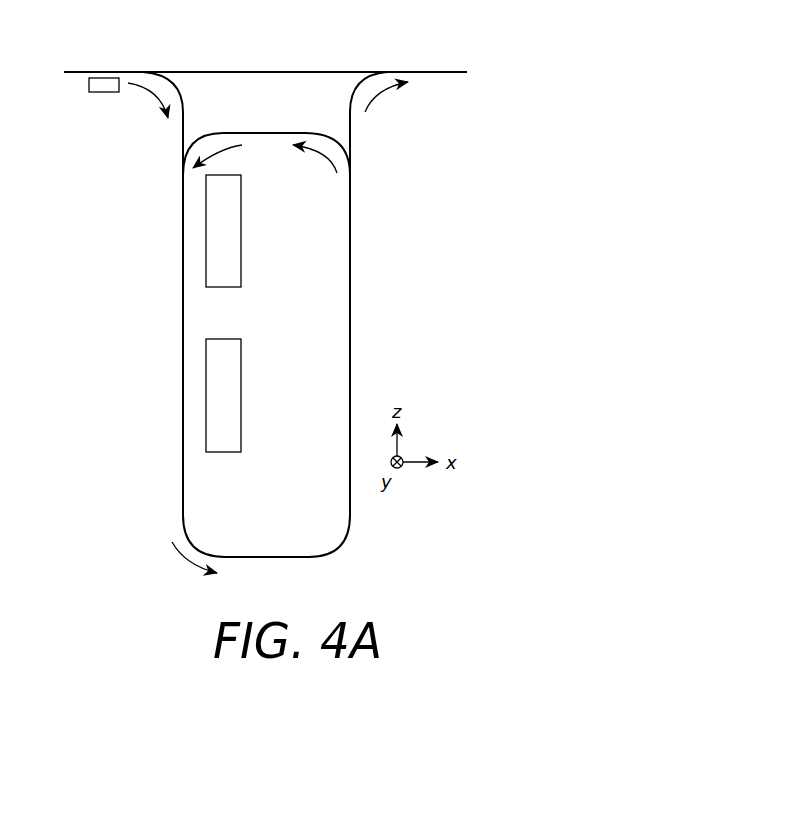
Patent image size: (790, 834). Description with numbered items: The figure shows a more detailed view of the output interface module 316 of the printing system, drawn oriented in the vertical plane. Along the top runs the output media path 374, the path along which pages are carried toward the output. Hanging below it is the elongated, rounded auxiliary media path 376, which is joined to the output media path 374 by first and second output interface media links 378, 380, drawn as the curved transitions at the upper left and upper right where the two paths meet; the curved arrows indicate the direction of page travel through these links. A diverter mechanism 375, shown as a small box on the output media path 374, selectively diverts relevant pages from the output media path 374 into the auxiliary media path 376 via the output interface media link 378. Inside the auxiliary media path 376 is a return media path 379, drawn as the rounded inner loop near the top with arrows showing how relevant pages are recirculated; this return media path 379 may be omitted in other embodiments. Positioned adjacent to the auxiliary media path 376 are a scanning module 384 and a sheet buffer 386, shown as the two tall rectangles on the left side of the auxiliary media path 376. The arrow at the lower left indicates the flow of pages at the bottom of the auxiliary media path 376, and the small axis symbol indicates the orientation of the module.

The output interface module 316 is at (362, 48).
The output media path 374 is at (100, 71).
The diverter mechanism 375 is at (107, 93).
The auxiliary media path 376 is at (350, 367).
The first output interface media link 378 is at (182, 103).
The return media path 379 is at (313, 130).
The second output interface media link 380 is at (352, 115).
The scanning module 384 is at (242, 218).
The sheet buffer 386 is at (242, 390).